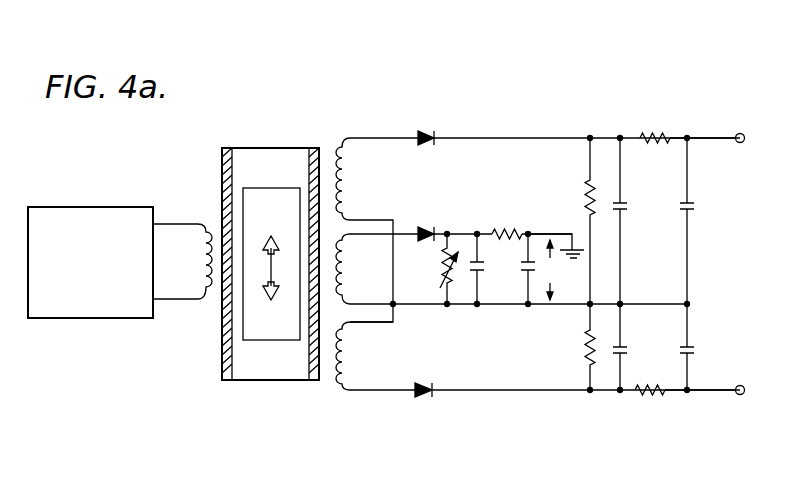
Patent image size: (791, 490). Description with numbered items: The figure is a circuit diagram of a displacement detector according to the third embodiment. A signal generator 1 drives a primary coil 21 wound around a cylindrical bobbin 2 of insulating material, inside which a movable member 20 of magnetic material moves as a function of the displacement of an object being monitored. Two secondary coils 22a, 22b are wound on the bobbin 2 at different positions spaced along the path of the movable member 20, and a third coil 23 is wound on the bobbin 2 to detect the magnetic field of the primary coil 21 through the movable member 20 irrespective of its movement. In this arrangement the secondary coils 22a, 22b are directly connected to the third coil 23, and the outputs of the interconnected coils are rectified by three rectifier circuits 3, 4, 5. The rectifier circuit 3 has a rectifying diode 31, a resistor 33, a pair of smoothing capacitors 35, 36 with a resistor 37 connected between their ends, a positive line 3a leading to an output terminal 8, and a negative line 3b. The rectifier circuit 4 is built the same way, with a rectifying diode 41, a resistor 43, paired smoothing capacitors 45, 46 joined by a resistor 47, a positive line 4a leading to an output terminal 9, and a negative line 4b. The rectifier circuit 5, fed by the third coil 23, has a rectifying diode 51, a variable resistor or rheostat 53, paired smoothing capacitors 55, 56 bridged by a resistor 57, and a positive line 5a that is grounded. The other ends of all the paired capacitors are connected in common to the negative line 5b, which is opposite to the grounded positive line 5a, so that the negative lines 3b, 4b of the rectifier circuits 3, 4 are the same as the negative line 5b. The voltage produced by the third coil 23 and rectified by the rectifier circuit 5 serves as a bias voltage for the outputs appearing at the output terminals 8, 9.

The signal generator 1 is at (100, 216).
The primary coil 21 is at (197, 241).
The cylindrical bobbin 2 is at (222, 344).
The movable member 20 is at (270, 324).
The rectifier circuit 3 is at (554, 84).
The secondary coil 22a is at (348, 187).
The negative line 3b is at (379, 214).
The rectifying diode 31 is at (425, 133).
The resistor 37 is at (650, 133).
The positive line 3a is at (706, 135).
The output terminal 8 is at (740, 133).
The resistor 33 is at (587, 192).
The smoothing capacitor 35 is at (626, 205).
The smoothing capacitor 36 is at (696, 206).
The rectifier circuit 5 is at (475, 204).
The third coil 23 is at (346, 281).
The rectifying diode 51 is at (427, 229).
The negative line 5b is at (418, 307).
The variable resistor 53 is at (440, 270).
The smoothing capacitor 55 is at (480, 272).
The smoothing capacitor 56 is at (525, 266).
The resistor 57 is at (505, 231).
The positive line 5a is at (553, 233).
The rectifier circuit 4 is at (523, 402).
The secondary coil 22b is at (347, 381).
The negative line 4b is at (371, 325).
The rectifying diode 41 is at (424, 400).
The resistor 43 is at (586, 350).
The smoothing capacitor 45 is at (626, 350).
The smoothing capacitor 46 is at (697, 350).
The resistor 47 is at (648, 396).
The positive line 4a is at (714, 393).
The output terminal 9 is at (741, 385).